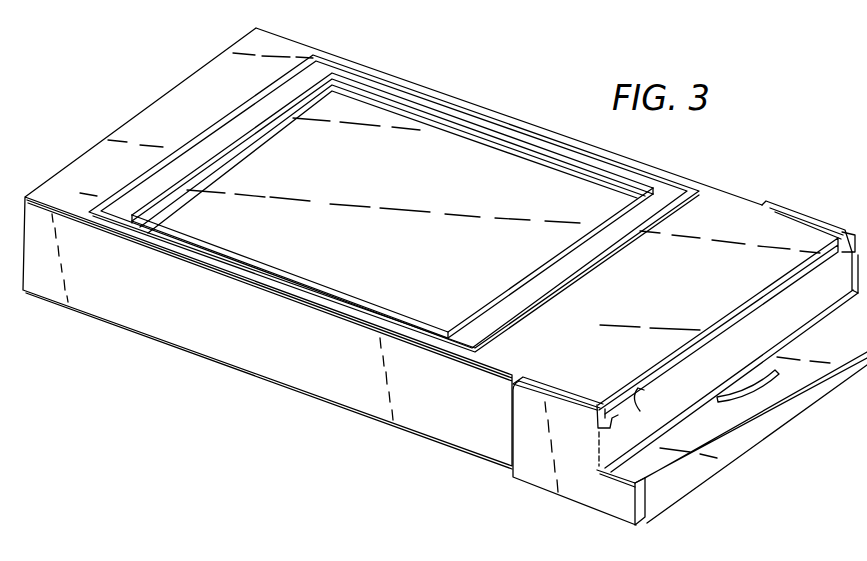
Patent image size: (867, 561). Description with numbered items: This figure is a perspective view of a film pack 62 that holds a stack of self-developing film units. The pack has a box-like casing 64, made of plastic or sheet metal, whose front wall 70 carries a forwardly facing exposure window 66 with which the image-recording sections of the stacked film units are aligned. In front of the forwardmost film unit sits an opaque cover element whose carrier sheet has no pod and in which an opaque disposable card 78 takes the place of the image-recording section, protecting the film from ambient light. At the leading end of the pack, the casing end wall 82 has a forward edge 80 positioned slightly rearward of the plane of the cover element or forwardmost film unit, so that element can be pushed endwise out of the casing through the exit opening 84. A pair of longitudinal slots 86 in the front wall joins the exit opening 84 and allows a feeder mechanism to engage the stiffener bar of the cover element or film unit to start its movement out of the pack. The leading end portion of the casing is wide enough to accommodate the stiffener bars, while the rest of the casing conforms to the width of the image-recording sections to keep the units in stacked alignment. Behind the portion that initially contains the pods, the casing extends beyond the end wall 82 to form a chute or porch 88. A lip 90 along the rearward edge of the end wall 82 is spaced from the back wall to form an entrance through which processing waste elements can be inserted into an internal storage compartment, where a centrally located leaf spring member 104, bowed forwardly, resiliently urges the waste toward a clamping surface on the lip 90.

The film pack 62 is at (392, 74).
The casing 64 is at (323, 374).
The exposure window 66 is at (452, 131).
The front wall 70 is at (710, 228).
The disposable card 78 is at (498, 180).
The forward edge 80 is at (650, 397).
The end wall 82 is at (697, 393).
The exit opening 84 is at (840, 258).
The longitudinal slots 86 is at (803, 218).
The chute 88 is at (772, 427).
The lip 90 is at (793, 347).
The leaf spring member 104 is at (746, 383).